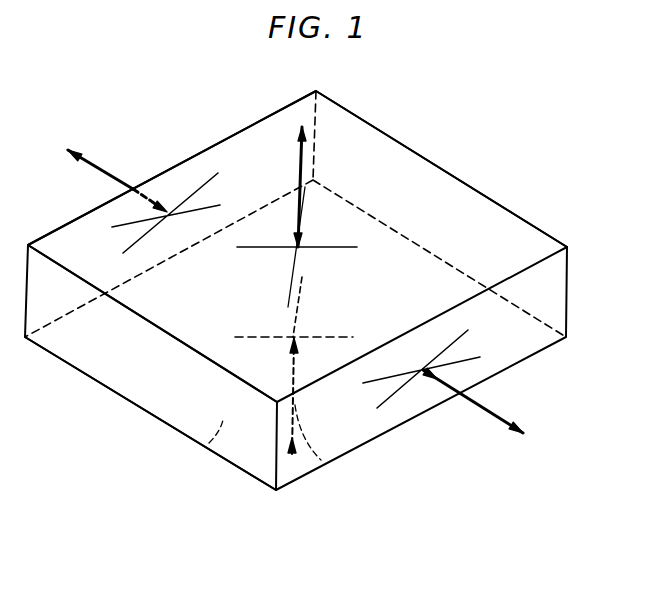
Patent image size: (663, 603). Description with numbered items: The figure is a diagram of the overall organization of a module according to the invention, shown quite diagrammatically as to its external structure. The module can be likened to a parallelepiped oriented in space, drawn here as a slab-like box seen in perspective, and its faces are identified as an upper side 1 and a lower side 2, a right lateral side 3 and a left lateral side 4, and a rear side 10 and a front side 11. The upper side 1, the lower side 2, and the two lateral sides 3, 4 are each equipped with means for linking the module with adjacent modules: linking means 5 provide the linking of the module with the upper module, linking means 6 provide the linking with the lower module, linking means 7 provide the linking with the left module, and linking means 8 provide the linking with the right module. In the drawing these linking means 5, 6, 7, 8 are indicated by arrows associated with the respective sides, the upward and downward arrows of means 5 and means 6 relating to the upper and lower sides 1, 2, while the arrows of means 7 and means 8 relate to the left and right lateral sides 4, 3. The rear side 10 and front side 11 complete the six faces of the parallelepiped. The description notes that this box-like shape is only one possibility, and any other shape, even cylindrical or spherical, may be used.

The upper side 1 is at (408, 167).
The lower side 2 is at (207, 447).
The right lateral side 3 is at (500, 365).
The left lateral side 4 is at (247, 152).
The linking means with upper module 5 is at (300, 165).
The linking means with lower module 6 is at (321, 460).
The linking means with left module 7 is at (107, 172).
The linking means with right module 8 is at (500, 415).
The rear side 10 is at (488, 216).
The front side 11 is at (135, 390).